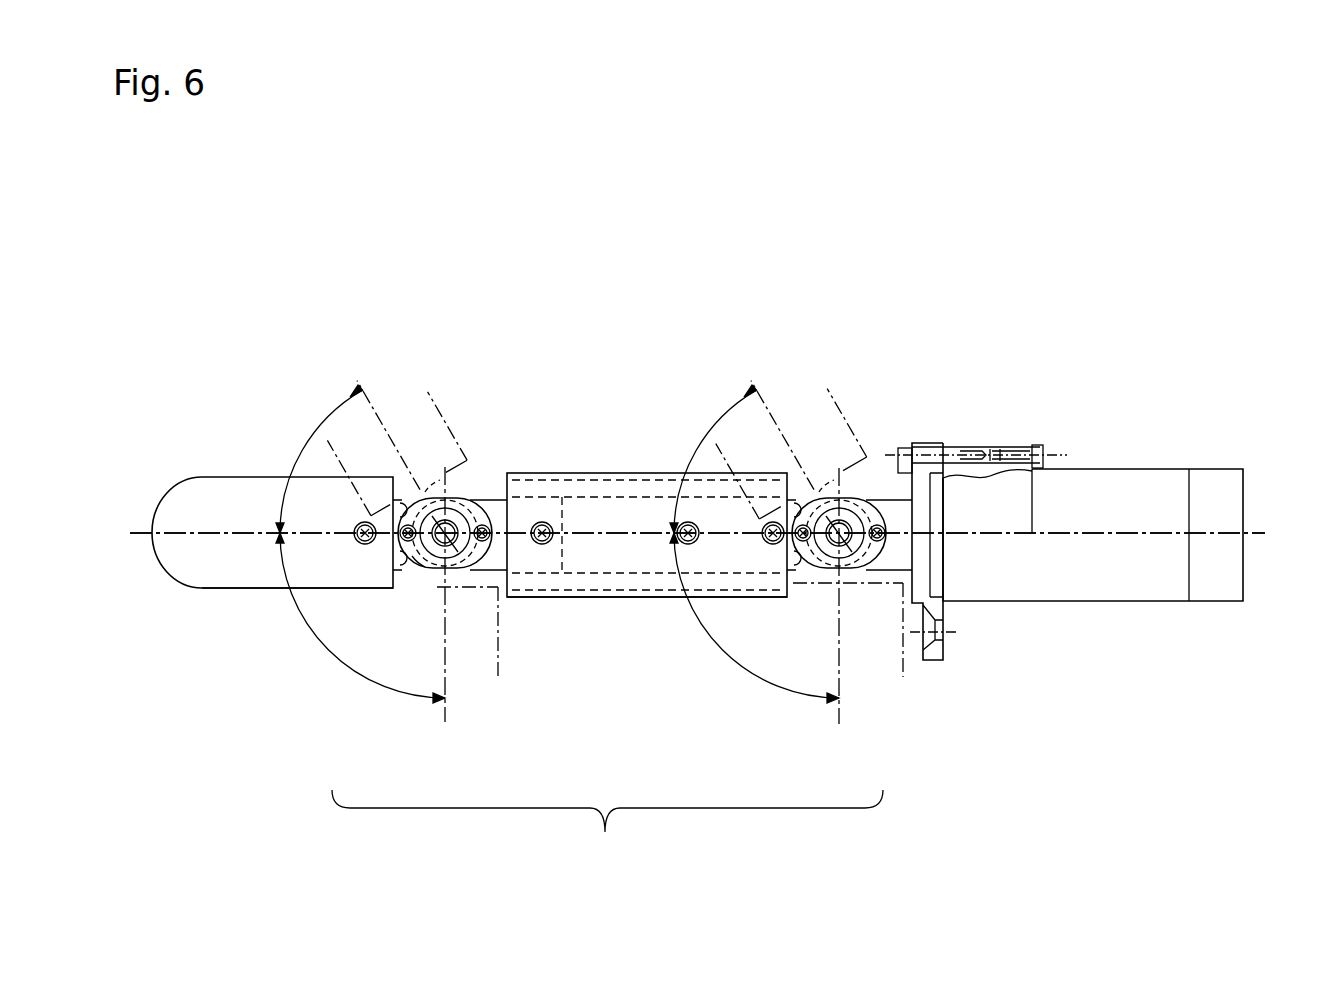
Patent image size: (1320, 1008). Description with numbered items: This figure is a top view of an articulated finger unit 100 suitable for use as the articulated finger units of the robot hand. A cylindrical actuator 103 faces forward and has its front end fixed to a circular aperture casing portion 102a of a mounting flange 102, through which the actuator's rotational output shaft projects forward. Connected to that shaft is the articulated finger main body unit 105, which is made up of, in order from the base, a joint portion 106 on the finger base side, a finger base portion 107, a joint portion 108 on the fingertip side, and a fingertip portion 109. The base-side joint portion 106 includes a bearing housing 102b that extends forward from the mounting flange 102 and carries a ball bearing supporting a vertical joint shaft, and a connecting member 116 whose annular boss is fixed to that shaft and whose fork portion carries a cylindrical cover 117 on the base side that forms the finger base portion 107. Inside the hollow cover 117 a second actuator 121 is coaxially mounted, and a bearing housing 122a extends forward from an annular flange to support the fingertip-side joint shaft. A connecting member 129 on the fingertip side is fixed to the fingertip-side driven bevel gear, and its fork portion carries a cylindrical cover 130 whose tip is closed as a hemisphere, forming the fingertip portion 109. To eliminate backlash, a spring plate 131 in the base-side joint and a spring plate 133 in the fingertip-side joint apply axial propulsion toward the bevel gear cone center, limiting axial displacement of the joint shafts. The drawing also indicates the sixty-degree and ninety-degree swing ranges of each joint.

The articulated finger unit 100 is at (967, 265).
The mounting flange 102 is at (1003, 447).
The circular aperture casing portion 102a is at (933, 448).
The bearing housing on the finger base side 102b is at (885, 508).
The actuator 103 is at (1113, 483).
The articulated finger main body unit 105 is at (607, 830).
The joint portion on the finger base side 106 is at (860, 606).
The finger base portion 107 is at (650, 614).
The joint portion on the fingertip side 108 is at (465, 598).
The fingertip portion 109 is at (249, 594).
The connecting member on the finger base side 116 is at (803, 493).
The cylindrical cover on the base side 117 is at (593, 473).
The second actuator 121 is at (628, 497).
The bearing housing on the finger base side 122a is at (490, 507).
The connecting member on the fingertip side 129 is at (410, 507).
The cylindrical cover on the fingertip side 130 is at (228, 478).
The spring plate 131 is at (816, 570).
The spring plate 133 is at (425, 570).